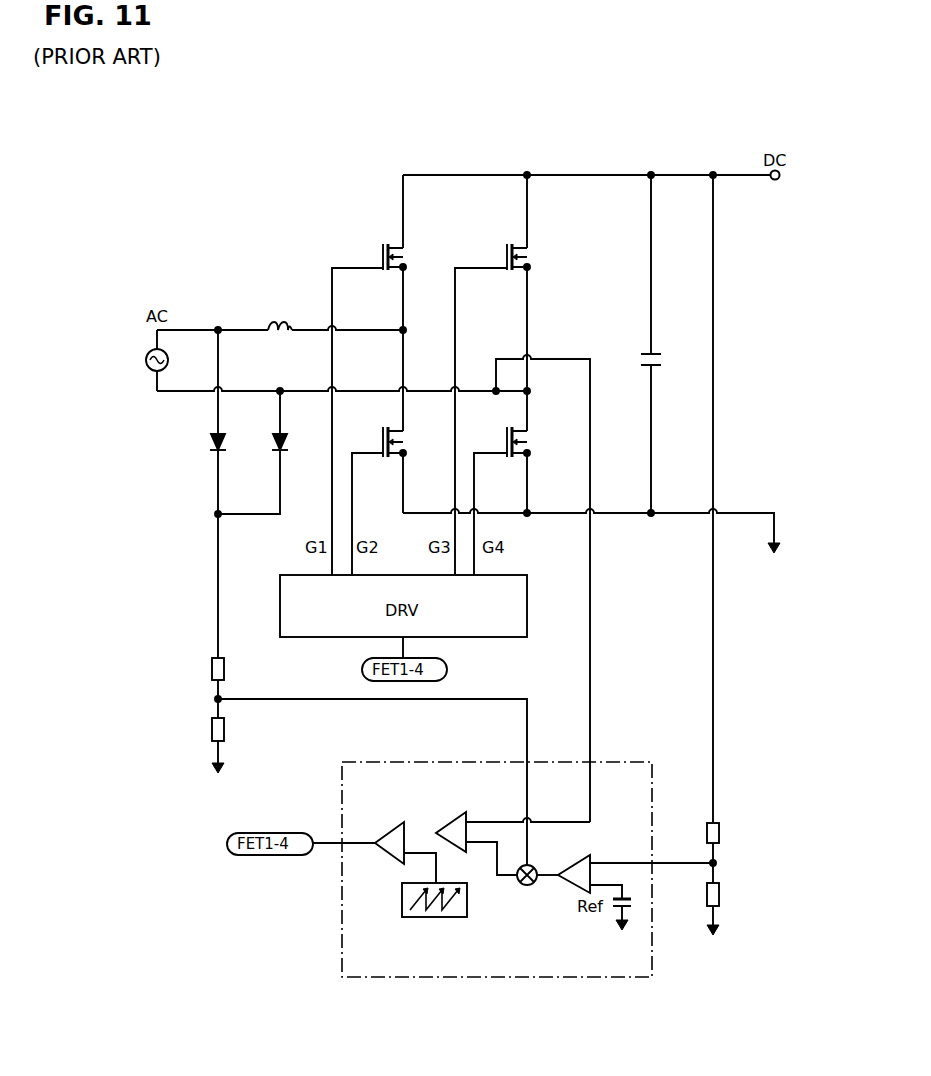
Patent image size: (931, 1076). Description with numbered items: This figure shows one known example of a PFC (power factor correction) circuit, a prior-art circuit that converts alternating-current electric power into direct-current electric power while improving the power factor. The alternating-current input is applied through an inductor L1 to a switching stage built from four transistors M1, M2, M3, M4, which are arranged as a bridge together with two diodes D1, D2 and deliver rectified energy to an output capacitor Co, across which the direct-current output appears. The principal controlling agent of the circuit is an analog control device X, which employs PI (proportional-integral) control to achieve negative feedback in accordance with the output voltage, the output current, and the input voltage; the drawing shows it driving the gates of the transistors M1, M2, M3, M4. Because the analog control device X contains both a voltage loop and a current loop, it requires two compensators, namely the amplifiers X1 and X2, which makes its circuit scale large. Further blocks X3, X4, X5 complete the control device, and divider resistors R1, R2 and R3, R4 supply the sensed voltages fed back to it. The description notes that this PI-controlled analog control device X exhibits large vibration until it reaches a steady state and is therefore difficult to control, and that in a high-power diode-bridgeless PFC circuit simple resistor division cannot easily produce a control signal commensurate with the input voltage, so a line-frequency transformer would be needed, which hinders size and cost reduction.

The inductor L1 is at (279, 320).
The first FET switch M1 is at (409, 258).
The second FET switch M2 is at (409, 443).
The third FET switch M3 is at (533, 258).
The fourth FET switch M4 is at (533, 443).
The first diode D1 is at (228, 445).
The second diode D2 is at (290, 445).
The first resistor R1 is at (211, 671).
The second resistor R2 is at (211, 731).
The third resistor R3 is at (721, 836).
The fourth resistor R4 is at (721, 896).
The output capacitor Co is at (663, 364).
The analog control device X is at (435, 762).
The amplifier X1 is at (578, 861).
The amplifier X2 is at (459, 817).
The comparator X3 is at (396, 828).
The multiplier X4 is at (527, 885).
The sawtooth wave generator X5 is at (435, 917).